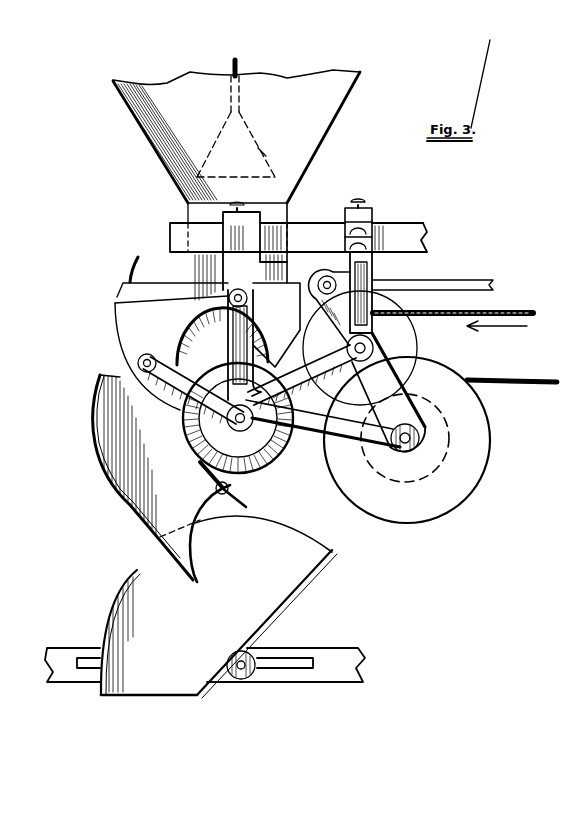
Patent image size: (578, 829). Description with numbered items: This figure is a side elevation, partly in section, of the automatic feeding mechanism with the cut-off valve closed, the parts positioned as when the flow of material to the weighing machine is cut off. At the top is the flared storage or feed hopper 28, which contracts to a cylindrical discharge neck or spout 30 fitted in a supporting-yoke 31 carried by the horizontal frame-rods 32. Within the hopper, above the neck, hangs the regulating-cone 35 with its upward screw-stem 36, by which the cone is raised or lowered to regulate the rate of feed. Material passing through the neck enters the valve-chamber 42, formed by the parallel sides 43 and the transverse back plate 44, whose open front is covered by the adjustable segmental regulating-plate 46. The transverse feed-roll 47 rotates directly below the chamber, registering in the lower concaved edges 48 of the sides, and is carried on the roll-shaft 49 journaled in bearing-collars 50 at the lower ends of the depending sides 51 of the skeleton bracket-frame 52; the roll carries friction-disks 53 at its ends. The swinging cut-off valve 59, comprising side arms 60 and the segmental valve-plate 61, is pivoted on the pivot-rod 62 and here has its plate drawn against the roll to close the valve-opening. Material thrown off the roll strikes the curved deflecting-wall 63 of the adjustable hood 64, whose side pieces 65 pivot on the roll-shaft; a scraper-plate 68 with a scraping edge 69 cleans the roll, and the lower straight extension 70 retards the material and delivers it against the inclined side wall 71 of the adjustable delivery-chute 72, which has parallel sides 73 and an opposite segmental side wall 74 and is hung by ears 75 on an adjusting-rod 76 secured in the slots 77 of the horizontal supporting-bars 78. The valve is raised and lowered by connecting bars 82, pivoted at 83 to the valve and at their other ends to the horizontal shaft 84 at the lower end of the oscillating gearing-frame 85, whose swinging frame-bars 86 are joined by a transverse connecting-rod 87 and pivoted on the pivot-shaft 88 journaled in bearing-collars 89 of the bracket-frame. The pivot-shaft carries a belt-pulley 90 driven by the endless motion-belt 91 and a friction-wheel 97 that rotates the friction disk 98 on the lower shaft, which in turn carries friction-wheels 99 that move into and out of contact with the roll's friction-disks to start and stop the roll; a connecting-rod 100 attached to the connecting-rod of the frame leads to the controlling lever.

The storage or feed hopper 28 is at (236, 136).
The discharge neck or spout 30 is at (281, 213).
The supporting-yoke 31 is at (178, 232).
The frame-rods 32 is at (404, 228).
The regulating-cone 35 is at (262, 152).
The screw-stem 36 is at (241, 65).
The valve-chamber 42 is at (255, 260).
The sides of valve-chamber 43 is at (170, 282).
The back plate 44 is at (290, 353).
The segmental regulating-plate 46 is at (135, 260).
The feed-roll 47 is at (272, 466).
The lower concaved edges 48 is at (215, 362).
The roll-shaft 49 is at (231, 428).
The bearing-collars 50 is at (227, 413).
The depending sides of bracket-frame 51 is at (253, 328).
The skeleton bracket-frame 52 is at (372, 213).
The friction-disks 53 is at (280, 450).
The swinging cut-off valve 59 is at (171, 353).
The side arms of cut-off valve 60 is at (158, 303).
The segmental valve-plate 61 is at (115, 337).
The pivot-rod 62 is at (247, 298).
The curved deflecting-wall 63 is at (106, 484).
The adjustable hood 64 is at (189, 520).
The side pieces of hood 65 is at (110, 428).
The scraper-plate 68 is at (246, 507).
The scraping blade or edge 69 is at (200, 462).
The lower straight extension 70 is at (160, 537).
The inclined side wall 71 is at (303, 587).
The adjustable delivery-chute 72 is at (155, 649).
The sides of delivery-chute 73 is at (312, 541).
The segmental side wall 74 is at (110, 606).
The ears 75 is at (248, 656).
The adjusting-rod 76 is at (241, 669).
The slots 77 is at (312, 658).
The supporting-bars 78 is at (352, 648).
The connecting bars or rods 82 is at (193, 390).
The pivotal connection 83 is at (147, 354).
The horizontal shaft 84 is at (417, 431).
The oscillating gearing-frame 85 is at (316, 280).
The swinging frame-bars 86 is at (388, 392).
The transverse connecting-rod 87 is at (327, 277).
The pivot-shaft 88 is at (375, 340).
The bearing-collars 89 is at (374, 348).
The belt-pulley 90 is at (400, 312).
The endless motion-belt 91 is at (510, 312).
The friction-wheel 97 is at (432, 312).
The friction wheel or disk 98 is at (445, 464).
The friction-wheels 99 is at (432, 519).
The connecting-rod 100 is at (474, 270).